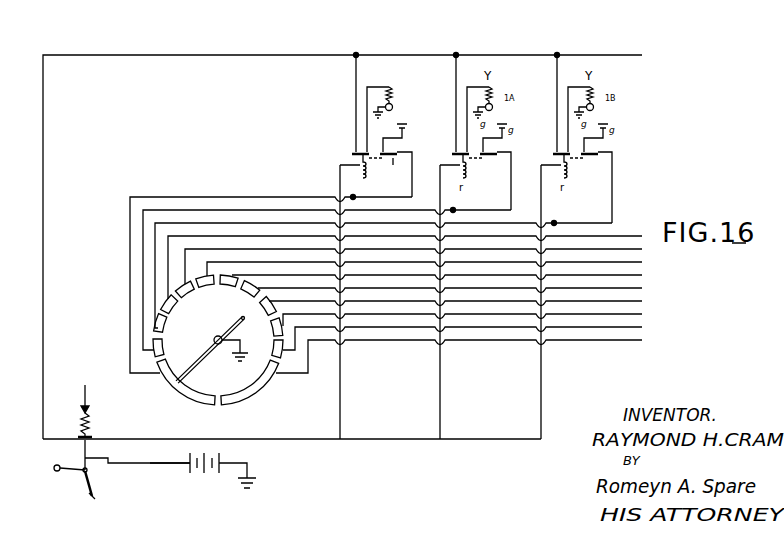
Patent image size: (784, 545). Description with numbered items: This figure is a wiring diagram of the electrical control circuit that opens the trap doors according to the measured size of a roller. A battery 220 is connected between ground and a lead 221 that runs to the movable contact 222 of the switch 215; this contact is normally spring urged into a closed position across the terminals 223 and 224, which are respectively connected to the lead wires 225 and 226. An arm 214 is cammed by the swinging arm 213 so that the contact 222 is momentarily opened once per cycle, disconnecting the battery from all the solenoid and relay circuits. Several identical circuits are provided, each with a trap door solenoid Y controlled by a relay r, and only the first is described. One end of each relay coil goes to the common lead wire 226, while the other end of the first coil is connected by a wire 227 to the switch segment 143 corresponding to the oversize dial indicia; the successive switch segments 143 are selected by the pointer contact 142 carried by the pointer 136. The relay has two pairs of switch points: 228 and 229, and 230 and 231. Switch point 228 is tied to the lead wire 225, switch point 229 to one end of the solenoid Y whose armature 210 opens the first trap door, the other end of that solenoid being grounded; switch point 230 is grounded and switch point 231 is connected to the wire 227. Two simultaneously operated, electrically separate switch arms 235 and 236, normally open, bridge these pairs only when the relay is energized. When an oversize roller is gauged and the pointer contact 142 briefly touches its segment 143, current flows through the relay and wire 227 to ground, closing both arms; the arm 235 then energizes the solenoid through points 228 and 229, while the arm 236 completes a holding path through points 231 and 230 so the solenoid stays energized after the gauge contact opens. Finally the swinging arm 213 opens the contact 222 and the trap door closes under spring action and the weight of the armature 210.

The lead wire 225 is at (257, 55).
The common lead wire 226 is at (262, 439).
The wire 227 is at (214, 197).
The armature 210 is at (393, 108).
The switch point 229 is at (355, 150).
The switch point 228 is at (352, 154).
The switch arm 235 is at (360, 159).
The switch point 230 is at (400, 150).
The switch point 231 is at (415, 156).
The switch arm 236 is at (393, 165).
The pointer 136 is at (241, 322).
The pointer contact 142 is at (176, 384).
The switch segments 143 is at (160, 345).
The movable contact 222 is at (82, 432).
The switch 215 is at (99, 432).
The terminal 223 is at (78, 448).
The terminal 224 is at (90, 441).
The arm 214 is at (89, 470).
The lead 221 is at (150, 464).
The battery 220 is at (206, 476).
The swinging arm 213 is at (95, 498).